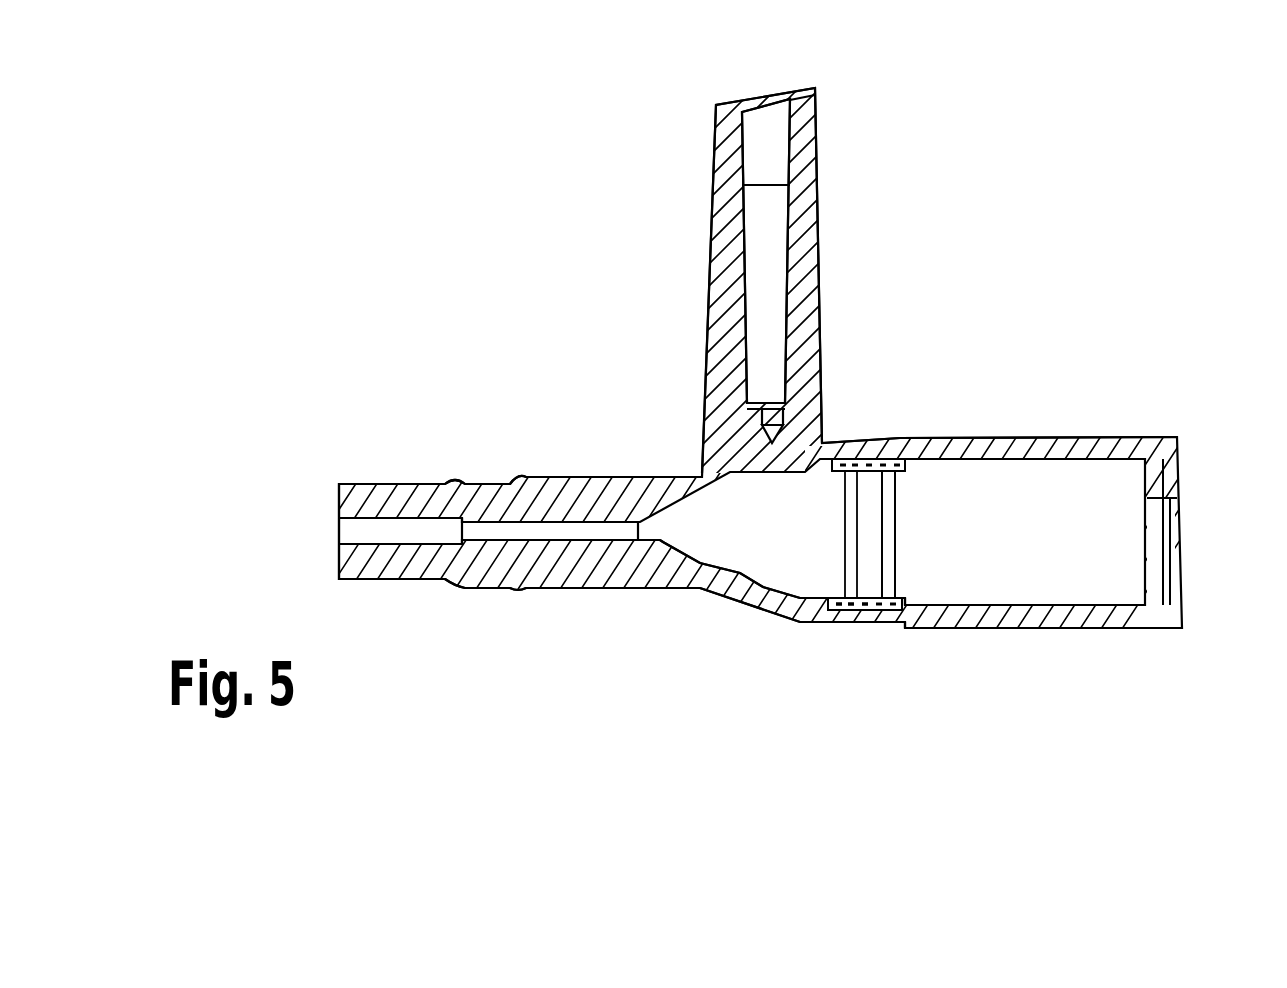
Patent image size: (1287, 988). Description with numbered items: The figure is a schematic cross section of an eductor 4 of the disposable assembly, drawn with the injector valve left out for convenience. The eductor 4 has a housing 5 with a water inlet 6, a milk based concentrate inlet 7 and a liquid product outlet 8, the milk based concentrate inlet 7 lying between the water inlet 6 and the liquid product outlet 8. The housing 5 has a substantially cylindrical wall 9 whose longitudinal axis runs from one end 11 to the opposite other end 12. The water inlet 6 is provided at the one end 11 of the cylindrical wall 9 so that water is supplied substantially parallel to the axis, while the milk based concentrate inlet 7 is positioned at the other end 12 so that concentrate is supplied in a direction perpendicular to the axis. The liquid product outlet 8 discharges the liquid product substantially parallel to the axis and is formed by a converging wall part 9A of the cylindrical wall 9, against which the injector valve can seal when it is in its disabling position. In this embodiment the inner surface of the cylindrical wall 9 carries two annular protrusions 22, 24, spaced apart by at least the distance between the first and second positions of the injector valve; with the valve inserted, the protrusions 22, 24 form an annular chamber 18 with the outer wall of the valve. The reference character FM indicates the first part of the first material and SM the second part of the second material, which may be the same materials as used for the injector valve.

The eductor 4 is at (983, 412).
The housing 5 is at (1052, 633).
The water inlet 6 is at (1158, 533).
The milk based concentrate inlet 7 is at (771, 468).
The liquid product outlet 8 is at (663, 537).
The cylindrical wall 9 is at (851, 612).
The converging wall part 9A is at (685, 512).
The one end 11 is at (1128, 437).
The other end 12 is at (735, 607).
The annular chamber 18 is at (873, 457).
The annular protrusion 22 is at (850, 459).
The annular protrusion 24 is at (899, 457).
The first part of the first material FM is at (882, 612).
The second part of the second material SM is at (918, 625).